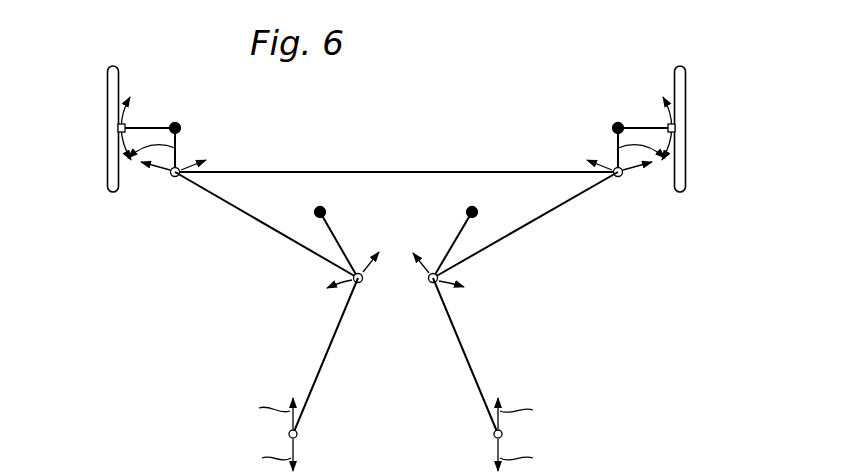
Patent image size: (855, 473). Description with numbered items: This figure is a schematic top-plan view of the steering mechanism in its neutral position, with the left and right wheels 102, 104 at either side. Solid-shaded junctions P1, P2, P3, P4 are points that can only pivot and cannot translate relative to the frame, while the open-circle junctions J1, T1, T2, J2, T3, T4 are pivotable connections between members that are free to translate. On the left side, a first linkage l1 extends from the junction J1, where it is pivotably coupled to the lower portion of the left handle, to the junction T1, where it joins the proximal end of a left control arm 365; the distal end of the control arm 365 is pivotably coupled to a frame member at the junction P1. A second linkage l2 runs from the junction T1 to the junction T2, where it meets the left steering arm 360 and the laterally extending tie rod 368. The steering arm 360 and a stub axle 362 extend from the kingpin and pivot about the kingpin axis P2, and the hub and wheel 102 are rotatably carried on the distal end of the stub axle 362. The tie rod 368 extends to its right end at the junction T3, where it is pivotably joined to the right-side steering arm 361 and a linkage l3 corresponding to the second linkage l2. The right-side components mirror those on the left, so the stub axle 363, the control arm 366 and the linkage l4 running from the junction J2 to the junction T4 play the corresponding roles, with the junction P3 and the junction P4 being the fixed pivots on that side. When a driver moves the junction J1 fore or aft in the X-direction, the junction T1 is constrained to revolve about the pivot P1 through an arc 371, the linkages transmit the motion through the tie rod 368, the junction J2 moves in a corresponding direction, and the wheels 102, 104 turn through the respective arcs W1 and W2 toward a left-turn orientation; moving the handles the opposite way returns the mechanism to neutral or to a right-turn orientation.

The wheel 102 is at (113, 65).
The wheel 104 is at (680, 65).
The steering arm 360 is at (121, 157).
The right-side steering arm 361 is at (672, 157).
The stub axle 362 is at (150, 126).
The right wheel link 363 is at (648, 126).
The left control arm 365 is at (338, 238).
The right steering link 366 is at (455, 238).
The tie rod 368 is at (414, 171).
The arc 371 is at (340, 290).
The arc W1 is at (122, 110).
The arc W2 is at (671, 110).
The junction P1 is at (323, 207).
The kingpin axis P2 is at (178, 123).
The junction P3 is at (615, 123).
The junction P4 is at (472, 207).
The junction T1 is at (361, 283).
The junction T2 is at (175, 177).
The junction T3 is at (619, 177).
The junction T4 is at (440, 278).
The junction J1 is at (299, 436).
The junction J2 is at (492, 436).
The first linkage l1 is at (329, 357).
The second linkage l2 is at (234, 208).
The linkage l3 is at (558, 208).
The link length l4 is at (466, 357).